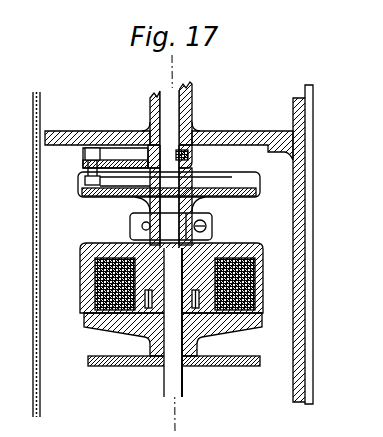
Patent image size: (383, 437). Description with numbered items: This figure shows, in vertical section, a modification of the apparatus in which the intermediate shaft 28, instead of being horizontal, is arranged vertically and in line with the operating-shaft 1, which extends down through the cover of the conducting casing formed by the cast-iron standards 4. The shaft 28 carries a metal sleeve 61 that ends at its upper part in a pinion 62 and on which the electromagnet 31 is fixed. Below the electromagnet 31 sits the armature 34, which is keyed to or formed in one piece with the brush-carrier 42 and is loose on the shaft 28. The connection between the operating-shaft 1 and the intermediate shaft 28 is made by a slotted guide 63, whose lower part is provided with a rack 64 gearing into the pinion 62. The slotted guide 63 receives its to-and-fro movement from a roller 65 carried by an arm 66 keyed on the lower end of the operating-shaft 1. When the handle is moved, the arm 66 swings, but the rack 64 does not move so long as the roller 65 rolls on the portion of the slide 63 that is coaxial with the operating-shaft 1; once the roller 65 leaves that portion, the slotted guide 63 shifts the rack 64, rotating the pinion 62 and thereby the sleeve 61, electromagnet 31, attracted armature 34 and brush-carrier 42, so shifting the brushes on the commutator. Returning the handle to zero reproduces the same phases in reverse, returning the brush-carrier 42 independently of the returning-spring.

The operating-shaft 1 is at (170, 165).
The standard 4 is at (303, 213).
The intermediate shaft 28 is at (174, 322).
The electromagnet 31 is at (228, 279).
The armature 34 is at (173, 334).
The brush-carrier 42 is at (209, 358).
The metal sleeve 61 is at (130, 244).
The pinion 62 is at (213, 232).
The slotted guide 63 is at (169, 183).
The rack 64 is at (150, 212).
The roller 65 is at (106, 181).
The arm 66 is at (115, 166).